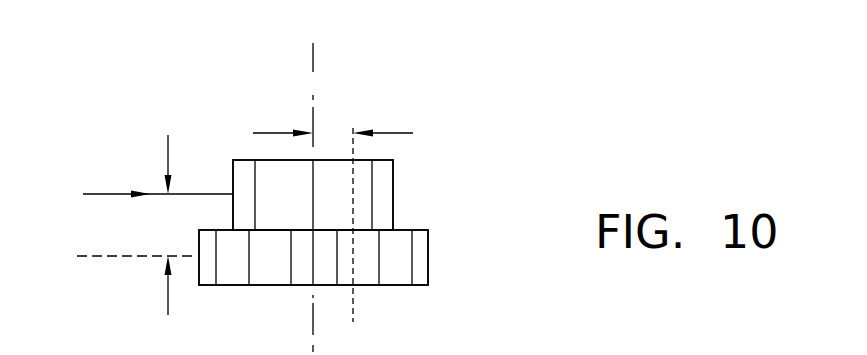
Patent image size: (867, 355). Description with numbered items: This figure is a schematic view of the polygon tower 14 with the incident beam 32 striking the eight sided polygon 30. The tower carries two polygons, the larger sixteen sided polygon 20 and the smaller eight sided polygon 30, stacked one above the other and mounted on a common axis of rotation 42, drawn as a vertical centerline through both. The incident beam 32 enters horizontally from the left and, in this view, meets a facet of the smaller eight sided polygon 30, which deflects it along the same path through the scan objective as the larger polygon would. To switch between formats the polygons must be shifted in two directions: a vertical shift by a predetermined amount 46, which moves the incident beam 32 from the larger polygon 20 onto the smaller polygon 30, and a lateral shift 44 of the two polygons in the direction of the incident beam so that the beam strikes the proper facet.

The polygon tower 14 is at (413, 86).
The sixteen sided polygon 20 is at (428, 257).
The eight sided polygon 30 is at (393, 198).
The incident beam 32 is at (93, 194).
The common axis of rotation 42 is at (313, 67).
The lateral shift 44 is at (333, 220).
The vertical shift 46 is at (135, 225).